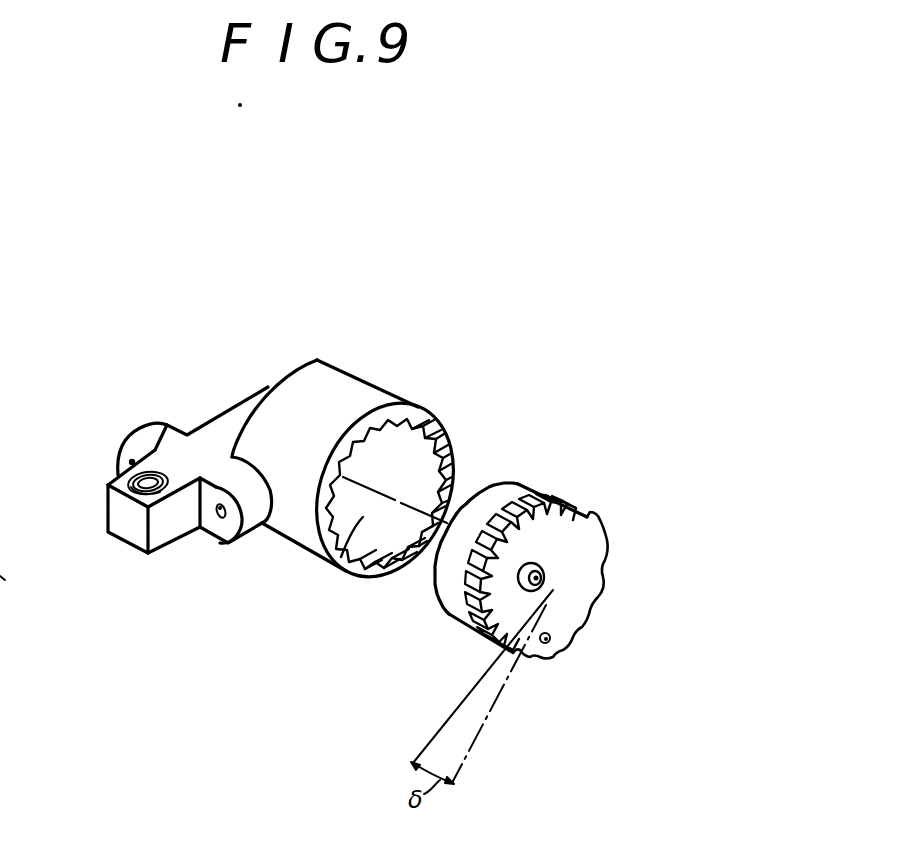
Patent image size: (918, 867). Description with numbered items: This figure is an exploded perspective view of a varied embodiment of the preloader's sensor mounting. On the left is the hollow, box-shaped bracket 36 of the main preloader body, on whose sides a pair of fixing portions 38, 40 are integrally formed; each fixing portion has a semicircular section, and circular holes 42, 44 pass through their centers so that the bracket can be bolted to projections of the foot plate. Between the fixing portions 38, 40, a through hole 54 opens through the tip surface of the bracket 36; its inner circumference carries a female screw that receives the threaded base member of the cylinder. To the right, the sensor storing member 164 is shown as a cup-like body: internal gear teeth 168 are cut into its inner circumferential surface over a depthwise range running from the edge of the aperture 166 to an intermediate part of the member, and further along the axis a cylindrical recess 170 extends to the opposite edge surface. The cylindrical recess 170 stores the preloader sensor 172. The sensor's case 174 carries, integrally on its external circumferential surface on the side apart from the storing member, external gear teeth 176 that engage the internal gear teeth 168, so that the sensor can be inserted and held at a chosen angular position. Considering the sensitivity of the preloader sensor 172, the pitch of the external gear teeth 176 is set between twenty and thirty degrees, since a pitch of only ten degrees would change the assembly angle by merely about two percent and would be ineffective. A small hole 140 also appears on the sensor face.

The bracket 36 is at (207, 422).
The fixing portion 38 is at (228, 550).
The fixing portion 40 is at (140, 427).
The circular hole 42 is at (214, 517).
The circular hole 44 is at (120, 466).
The through hole 54 is at (108, 512).
The pin hole 140 is at (548, 645).
The sensor storing member 164 is at (444, 380).
The aperture 166 is at (393, 428).
The internal gear teeth 168 is at (449, 460).
The cylindrical recess 170 is at (347, 567).
The preloader sensor 172 is at (553, 492).
The case 174 is at (460, 617).
The external gear teeth 176 is at (590, 512).